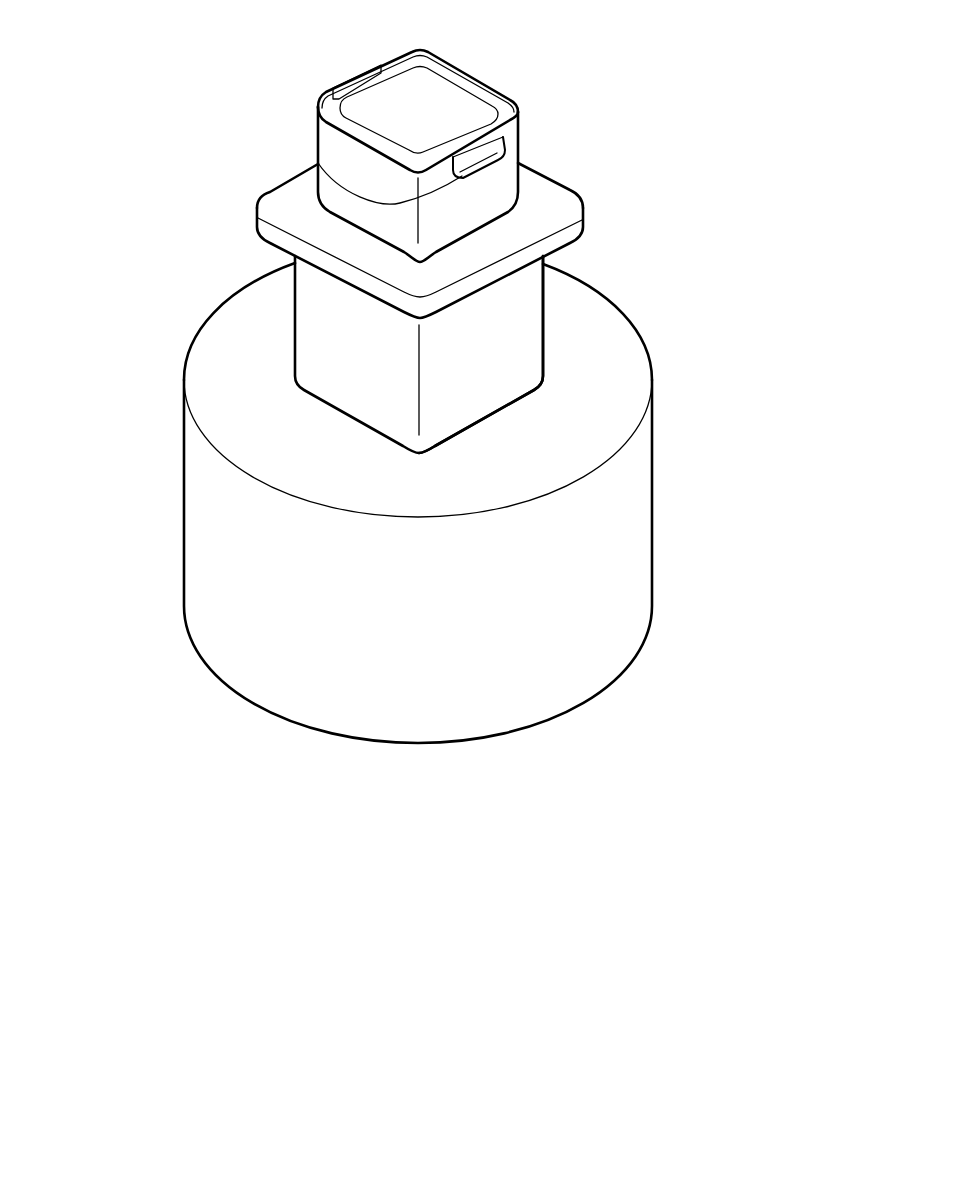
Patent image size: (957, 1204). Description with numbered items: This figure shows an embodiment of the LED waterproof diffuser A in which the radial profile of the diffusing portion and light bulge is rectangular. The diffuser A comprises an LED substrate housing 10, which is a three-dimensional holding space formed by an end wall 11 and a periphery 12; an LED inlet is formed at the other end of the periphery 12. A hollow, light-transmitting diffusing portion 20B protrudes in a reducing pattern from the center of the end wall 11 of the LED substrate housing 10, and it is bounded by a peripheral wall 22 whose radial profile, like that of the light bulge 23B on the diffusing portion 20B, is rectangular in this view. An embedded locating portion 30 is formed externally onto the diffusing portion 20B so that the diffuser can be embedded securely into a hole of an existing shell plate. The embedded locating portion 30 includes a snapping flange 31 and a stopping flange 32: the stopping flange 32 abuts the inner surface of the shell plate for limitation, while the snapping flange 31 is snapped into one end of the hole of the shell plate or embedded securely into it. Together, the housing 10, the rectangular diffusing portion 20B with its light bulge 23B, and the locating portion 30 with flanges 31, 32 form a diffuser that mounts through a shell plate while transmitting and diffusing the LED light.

The LED waterproof diffuser A is at (685, 178).
The LED substrate housing 10 is at (108, 492).
The end wall 11 is at (277, 435).
The periphery 12 is at (223, 558).
The diffusing portion 20B is at (264, 330).
The peripheral wall 22 is at (475, 345).
The light bulge 23B is at (518, 142).
The embedded locating portion 30 is at (148, 105).
The snapping flange 31 is at (318, 167).
The stopping flange 32 is at (282, 205).